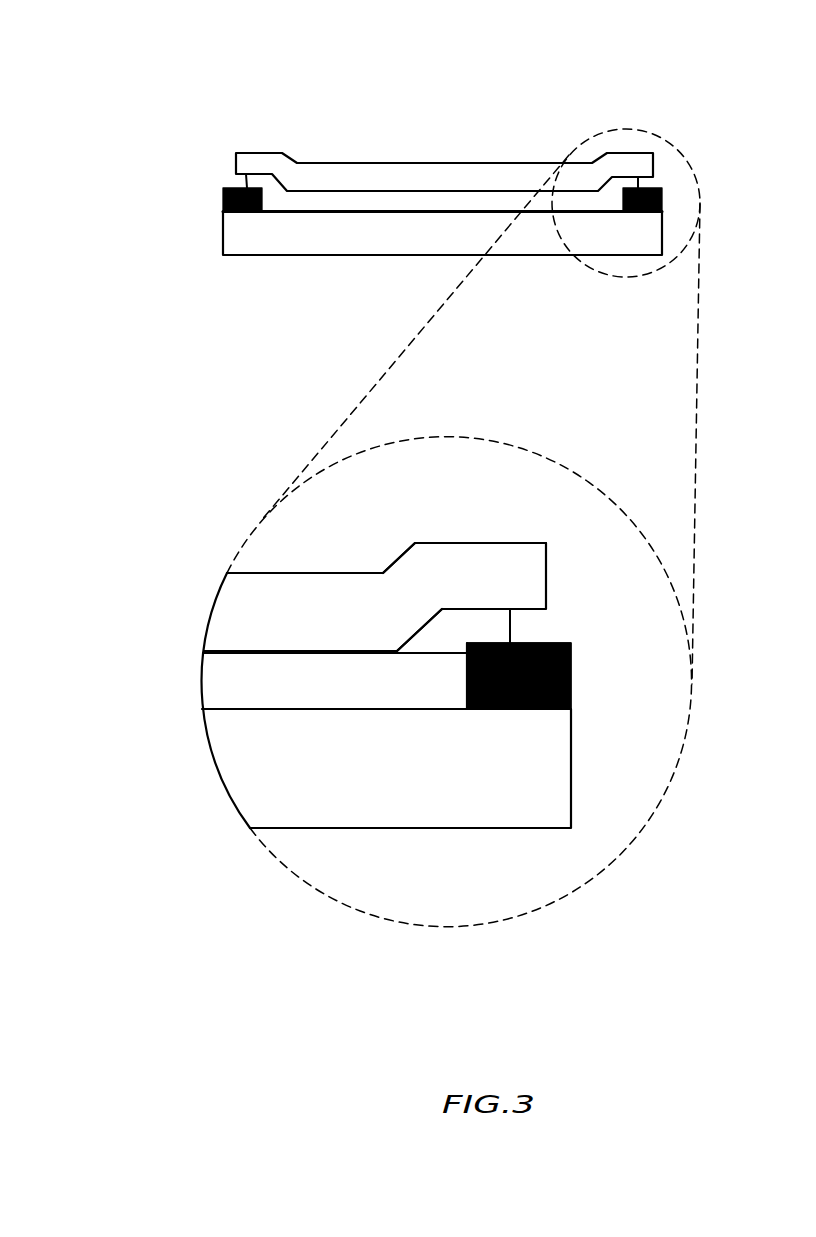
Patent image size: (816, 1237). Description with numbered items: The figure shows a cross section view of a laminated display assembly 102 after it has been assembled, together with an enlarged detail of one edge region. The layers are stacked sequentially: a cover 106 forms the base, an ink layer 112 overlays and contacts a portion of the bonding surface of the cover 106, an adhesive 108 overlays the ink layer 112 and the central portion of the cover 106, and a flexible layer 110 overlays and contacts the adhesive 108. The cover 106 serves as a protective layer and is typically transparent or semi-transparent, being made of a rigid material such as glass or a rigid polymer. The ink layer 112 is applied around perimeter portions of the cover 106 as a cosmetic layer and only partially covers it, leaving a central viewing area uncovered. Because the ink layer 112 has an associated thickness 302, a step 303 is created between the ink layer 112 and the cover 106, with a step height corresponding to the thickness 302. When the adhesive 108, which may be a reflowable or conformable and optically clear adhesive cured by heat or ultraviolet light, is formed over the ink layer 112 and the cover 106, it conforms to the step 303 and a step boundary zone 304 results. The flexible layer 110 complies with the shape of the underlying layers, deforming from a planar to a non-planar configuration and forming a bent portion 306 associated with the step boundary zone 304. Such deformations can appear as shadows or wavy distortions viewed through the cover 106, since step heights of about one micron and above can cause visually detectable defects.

The display assembly 102 is at (131, 60).
The cover 106 is at (390, 240).
The adhesive 108 is at (297, 205).
The flexible layer 110 is at (387, 168).
The ink layer 112 is at (223, 203).
The thickness 302 is at (580, 643).
The step 303 is at (454, 688).
The step boundary zone 304 is at (435, 689).
The bent portion 306 is at (381, 544).